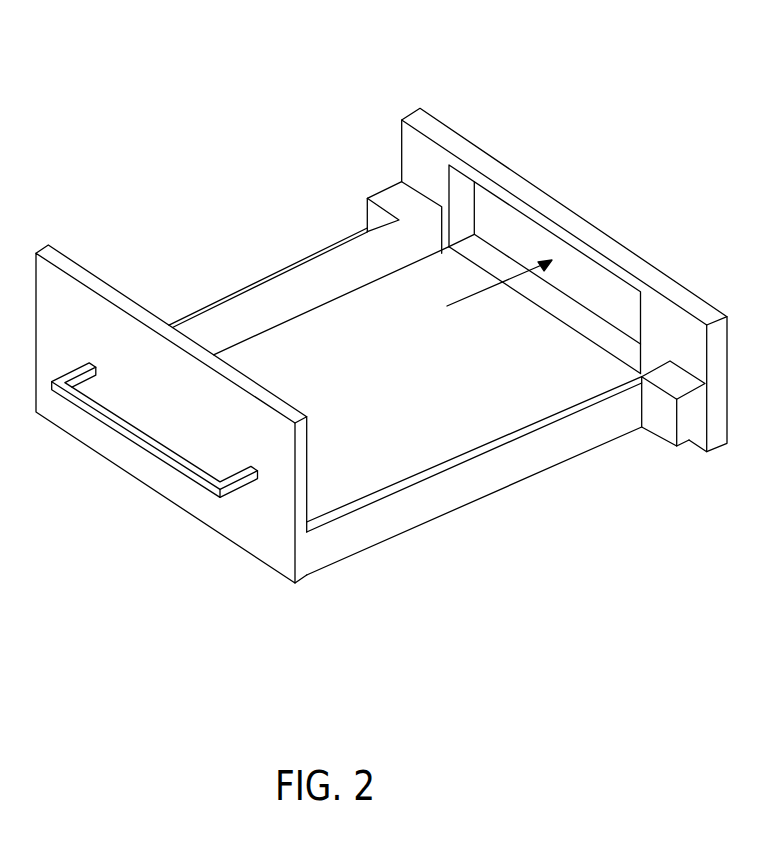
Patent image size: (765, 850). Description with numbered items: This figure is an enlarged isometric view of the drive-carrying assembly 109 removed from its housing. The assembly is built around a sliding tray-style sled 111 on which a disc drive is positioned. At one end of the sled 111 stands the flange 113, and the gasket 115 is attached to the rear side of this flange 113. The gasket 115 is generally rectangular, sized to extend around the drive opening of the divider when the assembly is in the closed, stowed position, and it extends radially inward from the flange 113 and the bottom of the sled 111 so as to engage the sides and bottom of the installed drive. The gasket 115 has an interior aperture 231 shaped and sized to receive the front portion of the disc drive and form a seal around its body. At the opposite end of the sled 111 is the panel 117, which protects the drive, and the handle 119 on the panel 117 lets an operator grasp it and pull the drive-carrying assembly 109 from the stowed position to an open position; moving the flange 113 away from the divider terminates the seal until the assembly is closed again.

The drive-carrying assembly 109 is at (656, 97).
The sled 111 is at (457, 418).
The flange 113 is at (390, 198).
The gasket 115 is at (577, 228).
The panel 117 is at (270, 540).
The handle 119 is at (130, 435).
The interior aperture 231 is at (480, 288).